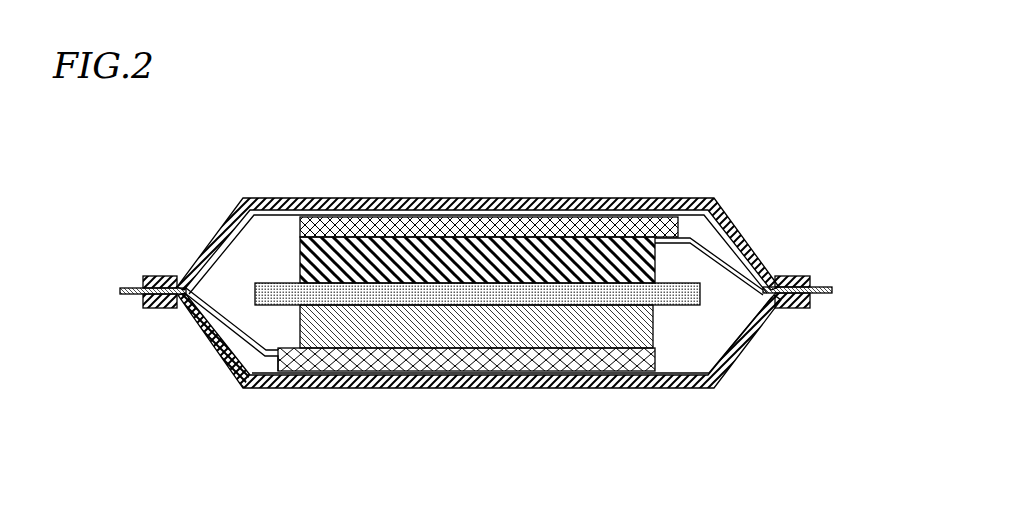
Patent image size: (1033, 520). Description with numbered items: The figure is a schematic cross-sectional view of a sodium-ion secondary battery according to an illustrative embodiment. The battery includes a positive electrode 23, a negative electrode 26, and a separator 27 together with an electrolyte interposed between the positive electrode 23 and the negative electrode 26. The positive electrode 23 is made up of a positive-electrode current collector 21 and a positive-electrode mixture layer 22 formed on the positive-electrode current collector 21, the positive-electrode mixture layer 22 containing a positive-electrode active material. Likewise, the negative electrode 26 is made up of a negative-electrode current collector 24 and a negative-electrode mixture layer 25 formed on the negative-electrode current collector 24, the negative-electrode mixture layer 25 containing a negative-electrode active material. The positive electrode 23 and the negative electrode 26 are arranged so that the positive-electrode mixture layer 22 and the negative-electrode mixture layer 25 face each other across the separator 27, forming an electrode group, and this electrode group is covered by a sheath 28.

The positive-electrode current collector 21 is at (508, 352).
The positive-electrode mixture layer 22 is at (457, 323).
The positive electrode 23 is at (433, 409).
The negative-electrode current collector 24 is at (533, 199).
The negative-electrode mixture layer 25 is at (543, 263).
The negative electrode 26 is at (547, 183).
The separator 27 is at (268, 292).
The sheath 28 is at (730, 377).